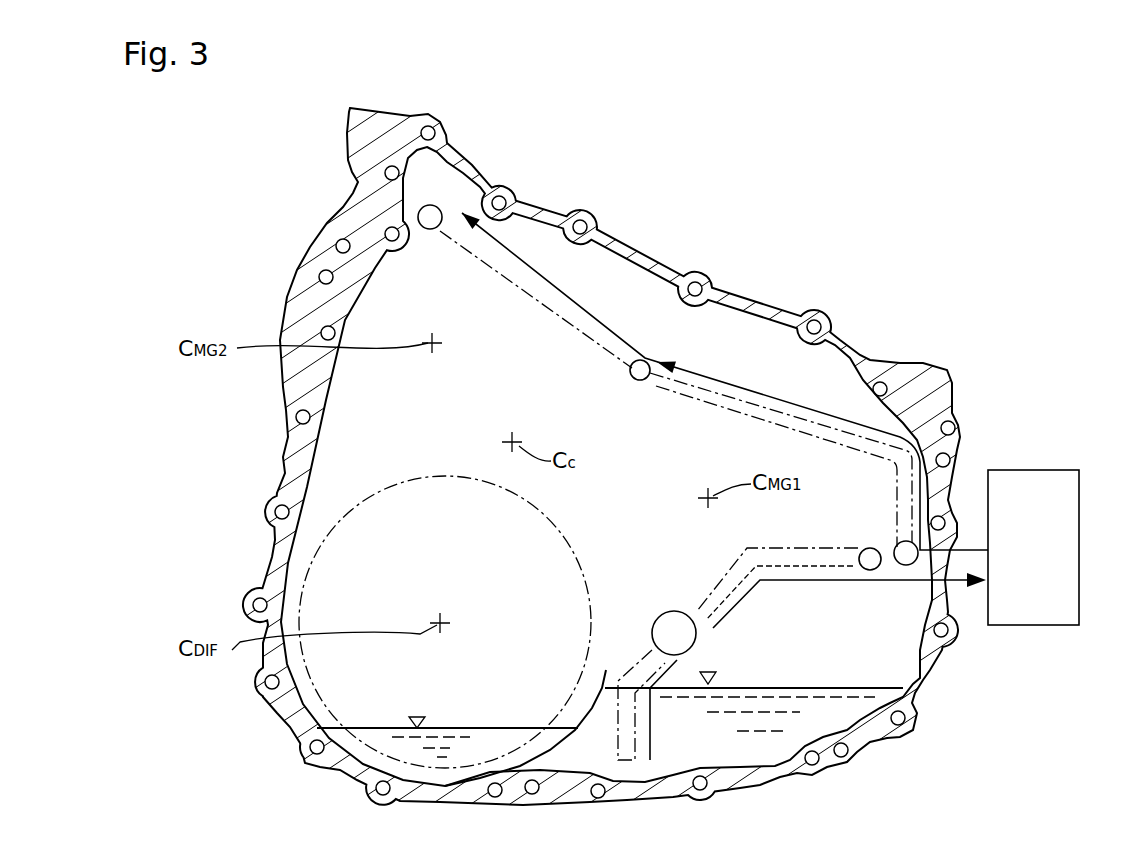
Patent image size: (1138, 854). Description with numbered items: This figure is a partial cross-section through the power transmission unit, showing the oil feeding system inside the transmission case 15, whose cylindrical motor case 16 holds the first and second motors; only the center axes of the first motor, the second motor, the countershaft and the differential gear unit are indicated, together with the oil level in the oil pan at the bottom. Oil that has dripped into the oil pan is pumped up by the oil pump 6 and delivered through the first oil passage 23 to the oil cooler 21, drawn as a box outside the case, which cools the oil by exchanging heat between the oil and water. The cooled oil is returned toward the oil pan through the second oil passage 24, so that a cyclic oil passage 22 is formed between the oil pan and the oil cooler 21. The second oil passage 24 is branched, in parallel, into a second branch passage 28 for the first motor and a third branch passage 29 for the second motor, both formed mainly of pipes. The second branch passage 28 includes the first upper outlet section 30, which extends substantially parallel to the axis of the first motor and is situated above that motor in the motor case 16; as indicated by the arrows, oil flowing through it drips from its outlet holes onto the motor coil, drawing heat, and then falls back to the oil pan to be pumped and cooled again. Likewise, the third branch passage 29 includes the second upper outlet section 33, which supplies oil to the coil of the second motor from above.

The transmission case 15 is at (282, 152).
The motor case 16 is at (637, 245).
The first upper outlet section 30 is at (436, 210).
The second branch passage 28 is at (703, 334).
The second upper outlet section 33 is at (644, 382).
The third branch passage 29 is at (773, 465).
The second oil passage 24 is at (582, 330).
The first oil passage 23 is at (805, 547).
The cyclic oil passage 22 is at (885, 608).
The oil pump 6 is at (660, 616).
The oil cooler 21 is at (1040, 468).